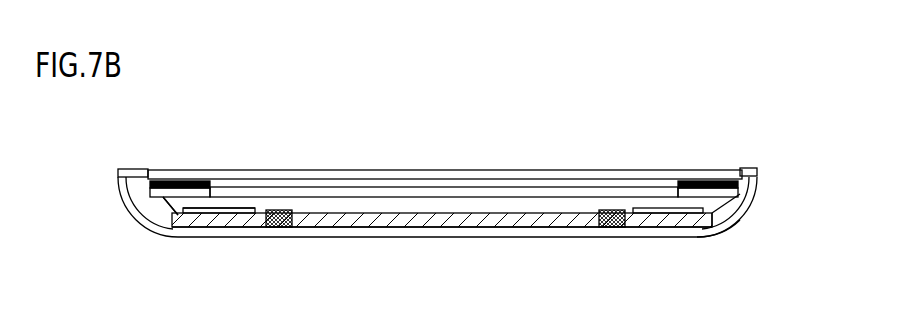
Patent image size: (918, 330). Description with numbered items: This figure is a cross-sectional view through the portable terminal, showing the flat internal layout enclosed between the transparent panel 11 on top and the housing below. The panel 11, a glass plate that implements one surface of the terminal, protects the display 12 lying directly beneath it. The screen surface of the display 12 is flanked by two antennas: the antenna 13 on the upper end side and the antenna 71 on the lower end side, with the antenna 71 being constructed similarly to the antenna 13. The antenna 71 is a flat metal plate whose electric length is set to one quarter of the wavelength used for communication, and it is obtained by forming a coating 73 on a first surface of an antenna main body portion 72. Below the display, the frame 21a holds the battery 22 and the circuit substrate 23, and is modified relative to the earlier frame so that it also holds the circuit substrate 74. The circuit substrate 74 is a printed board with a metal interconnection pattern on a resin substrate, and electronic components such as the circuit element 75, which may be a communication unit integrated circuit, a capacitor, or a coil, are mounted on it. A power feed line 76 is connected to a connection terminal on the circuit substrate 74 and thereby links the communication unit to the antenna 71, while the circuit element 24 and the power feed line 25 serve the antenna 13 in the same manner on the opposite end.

The panel 11 is at (478, 170).
The display 12 is at (542, 187).
The antenna 13 is at (752, 191).
The antenna 71 is at (386, 205).
The antenna main body portion 72 is at (183, 210).
The coating 73 is at (149, 186).
The circuit substrate 74 is at (236, 228).
The circuit element 75 is at (207, 213).
The power feed line 76 is at (160, 200).
The frame 21a is at (281, 228).
The battery 22 is at (438, 227).
The circuit substrate 23 is at (700, 228).
The circuit element 24 is at (668, 214).
The power feed line 25 is at (735, 233).